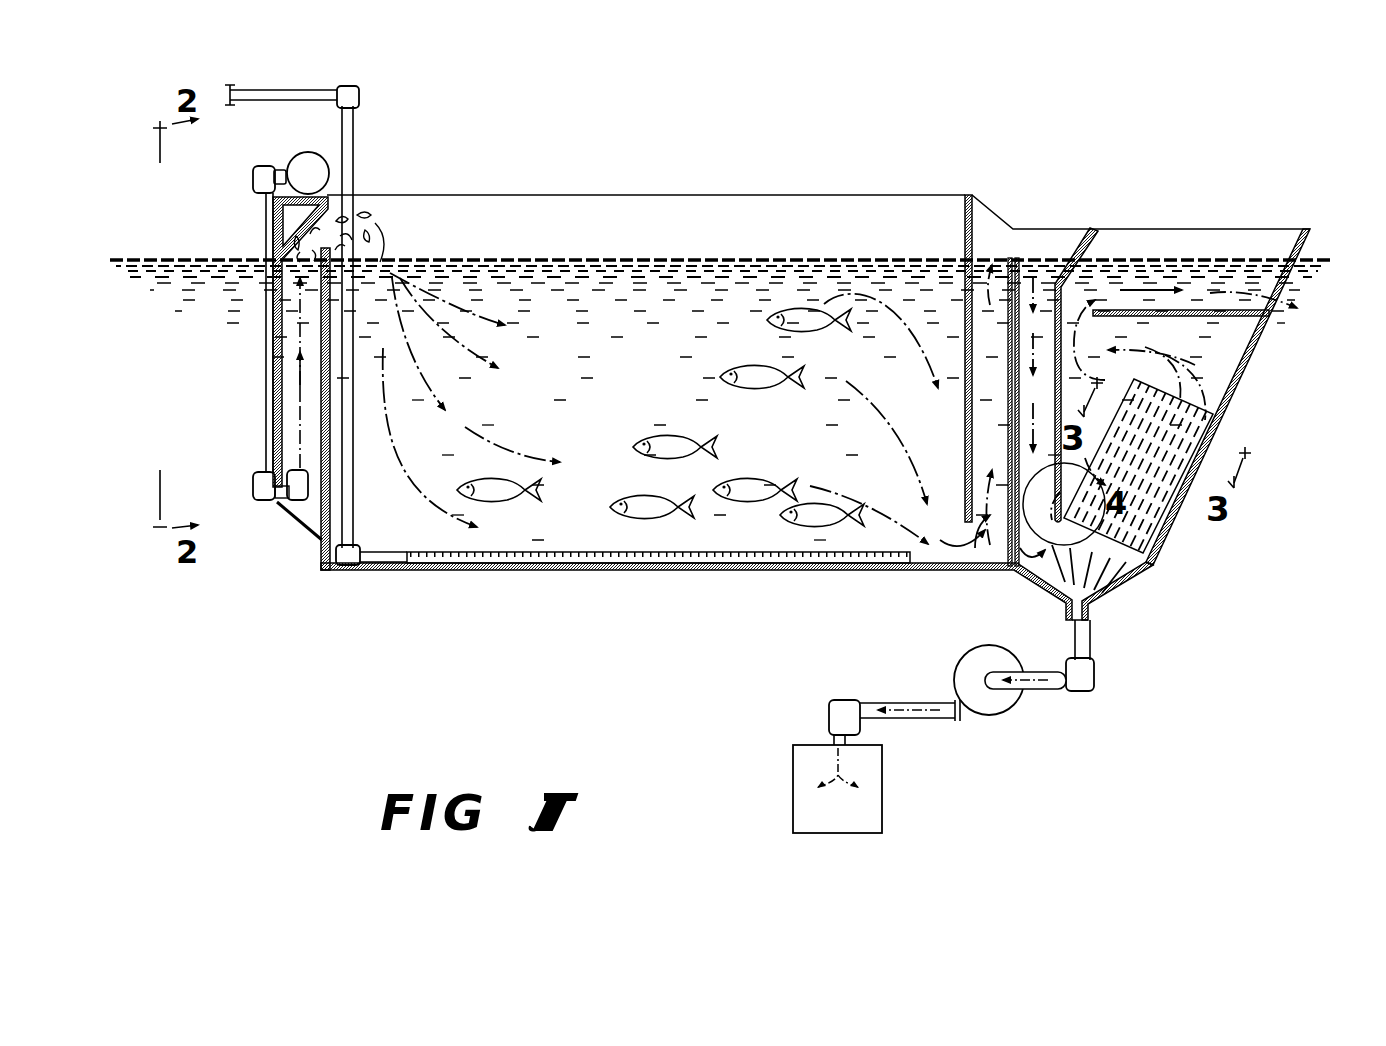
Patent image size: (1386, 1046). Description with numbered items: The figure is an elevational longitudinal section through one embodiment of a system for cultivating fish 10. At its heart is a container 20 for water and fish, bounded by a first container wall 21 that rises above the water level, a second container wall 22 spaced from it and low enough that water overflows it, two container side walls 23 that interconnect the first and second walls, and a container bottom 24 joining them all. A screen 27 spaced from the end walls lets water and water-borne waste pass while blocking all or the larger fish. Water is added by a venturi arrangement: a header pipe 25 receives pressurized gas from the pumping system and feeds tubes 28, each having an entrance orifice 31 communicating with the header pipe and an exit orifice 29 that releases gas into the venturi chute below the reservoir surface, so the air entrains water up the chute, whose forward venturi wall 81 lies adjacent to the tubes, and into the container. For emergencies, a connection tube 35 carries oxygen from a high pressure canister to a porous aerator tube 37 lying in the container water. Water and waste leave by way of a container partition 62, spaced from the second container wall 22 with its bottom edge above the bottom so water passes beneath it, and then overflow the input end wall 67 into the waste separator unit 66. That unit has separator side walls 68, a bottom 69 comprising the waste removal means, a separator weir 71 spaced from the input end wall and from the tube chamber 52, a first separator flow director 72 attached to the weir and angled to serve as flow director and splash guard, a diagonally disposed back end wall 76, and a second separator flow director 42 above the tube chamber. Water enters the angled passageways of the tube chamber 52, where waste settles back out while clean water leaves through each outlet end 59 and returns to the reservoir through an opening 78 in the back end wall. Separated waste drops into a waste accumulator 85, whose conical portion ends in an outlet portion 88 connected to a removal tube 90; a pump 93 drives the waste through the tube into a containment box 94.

The system for cultivating fish 10 is at (779, 158).
The container 20 is at (478, 578).
The first container wall 21 is at (322, 520).
The second container wall 22 is at (1003, 548).
The container side walls 23 is at (560, 218).
The container bottom 24 is at (350, 575).
The header pipe 25 is at (308, 160).
The screen 27 is at (975, 555).
The tubes 28 is at (264, 232).
The exit orifice 29 is at (300, 468).
The entrance orifice 31 is at (283, 172).
The connection tube 35 is at (353, 160).
The aerator tube 37 is at (652, 563).
The second separator flow director 42 is at (1190, 310).
The tube chamber 52 is at (1165, 433).
The outlet end 59 is at (1176, 400).
The container partition 62 is at (962, 222).
The waste separator unit 66 is at (1262, 338).
The input end wall 67 is at (1050, 548).
The separator side walls 68 is at (1253, 244).
The bottom 69 is at (1125, 577).
The separator weir 71 is at (1058, 305).
The first separator flow director 72 is at (1073, 258).
The back end wall 76 is at (1255, 356).
The opening 78 is at (1285, 283).
The forward venturi wall 81 is at (270, 345).
The waste accumulator 85 is at (1112, 602).
The outlet portion 88 is at (1092, 612).
The removal tube 90 is at (1073, 692).
The pump 93 is at (998, 706).
The containment box 94 is at (800, 805).